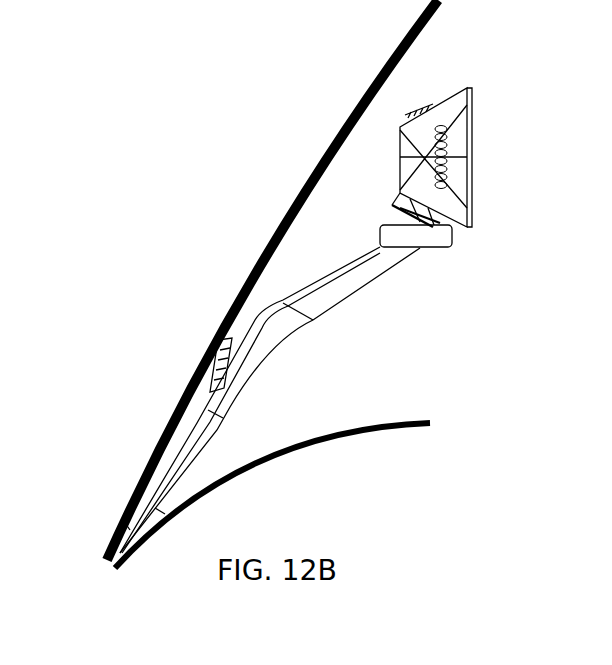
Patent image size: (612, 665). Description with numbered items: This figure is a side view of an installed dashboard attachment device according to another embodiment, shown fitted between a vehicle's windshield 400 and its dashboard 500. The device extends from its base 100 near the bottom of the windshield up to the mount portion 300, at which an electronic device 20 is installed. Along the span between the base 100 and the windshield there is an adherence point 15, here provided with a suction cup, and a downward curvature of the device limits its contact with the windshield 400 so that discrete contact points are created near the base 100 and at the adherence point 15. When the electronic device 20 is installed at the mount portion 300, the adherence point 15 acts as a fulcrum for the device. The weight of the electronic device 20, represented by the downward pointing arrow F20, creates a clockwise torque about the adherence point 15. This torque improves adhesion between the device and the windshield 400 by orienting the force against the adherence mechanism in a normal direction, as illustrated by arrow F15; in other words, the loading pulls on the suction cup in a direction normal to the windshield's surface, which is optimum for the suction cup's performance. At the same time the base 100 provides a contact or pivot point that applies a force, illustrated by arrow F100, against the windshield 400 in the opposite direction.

The windshield 400 is at (386, 31).
The dashboard 500 is at (447, 448).
The adherence point 15 is at (200, 365).
The base portion 100 is at (123, 520).
The mount portion 300 is at (452, 243).
The electronic device 20 is at (478, 160).
The arrow F20 is at (415, 248).
The arrow F15 is at (233, 373).
The arrow F100 is at (112, 540).